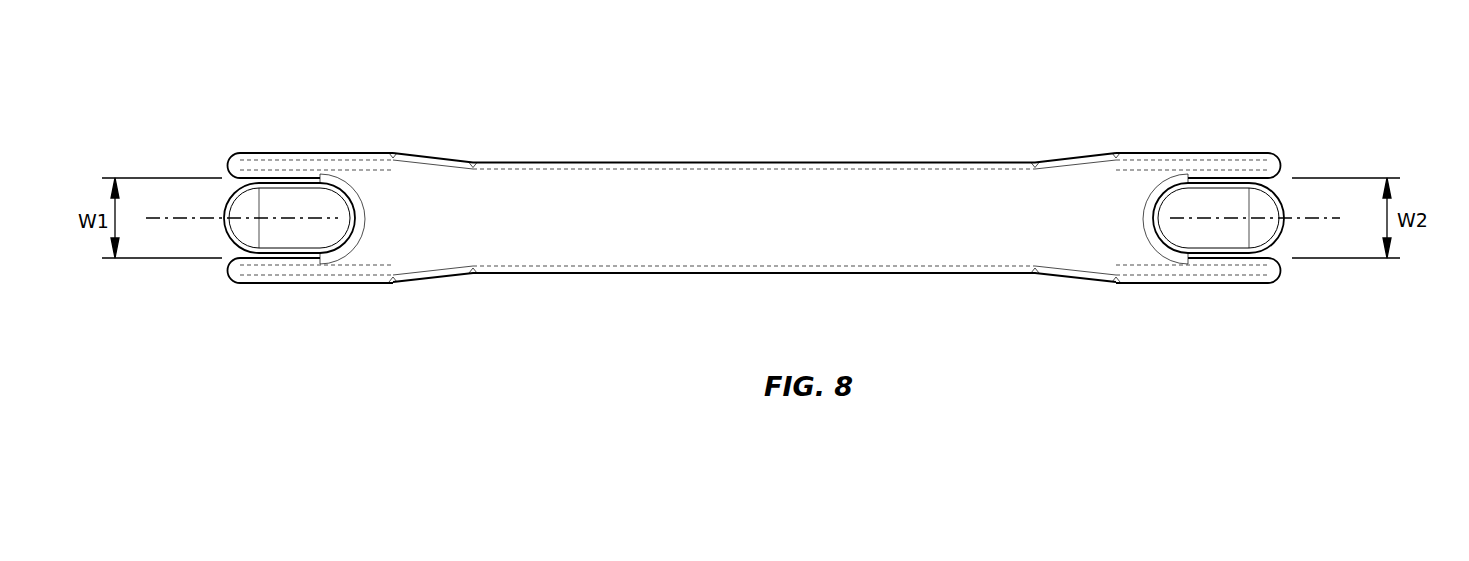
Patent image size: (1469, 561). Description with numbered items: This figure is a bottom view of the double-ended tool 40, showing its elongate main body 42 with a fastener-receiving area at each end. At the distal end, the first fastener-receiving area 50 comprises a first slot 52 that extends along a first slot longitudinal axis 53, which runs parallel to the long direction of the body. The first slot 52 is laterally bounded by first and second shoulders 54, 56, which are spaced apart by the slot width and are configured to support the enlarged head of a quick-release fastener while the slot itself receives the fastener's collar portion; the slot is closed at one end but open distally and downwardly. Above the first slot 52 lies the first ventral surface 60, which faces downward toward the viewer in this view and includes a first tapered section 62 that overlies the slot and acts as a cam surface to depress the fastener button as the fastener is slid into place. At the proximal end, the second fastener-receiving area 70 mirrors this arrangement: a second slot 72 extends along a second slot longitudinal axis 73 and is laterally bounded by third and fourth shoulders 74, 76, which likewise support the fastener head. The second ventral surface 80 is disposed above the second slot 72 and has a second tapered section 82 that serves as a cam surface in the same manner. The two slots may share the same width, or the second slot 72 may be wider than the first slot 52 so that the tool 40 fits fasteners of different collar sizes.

The tool 40 is at (962, 75).
The main body 42 is at (883, 257).
The first fastener-receiving area 50 is at (298, 313).
The first slot 52 is at (252, 183).
The first slot longitudinal axis 53 is at (168, 218).
The first shoulder 54 is at (263, 160).
The second shoulder 56 is at (273, 270).
The first ventral surface 60 is at (303, 198).
The first tapered section 62 is at (245, 208).
The second fastener-receiving area 70 is at (1215, 302).
The second slot 72 is at (1250, 181).
The second slot longitudinal axis 73 is at (1318, 219).
The third shoulder 74 is at (1237, 160).
The fourth shoulder 76 is at (1230, 270).
The second ventral surface 80 is at (1205, 200).
The second tapered section 82 is at (1255, 208).